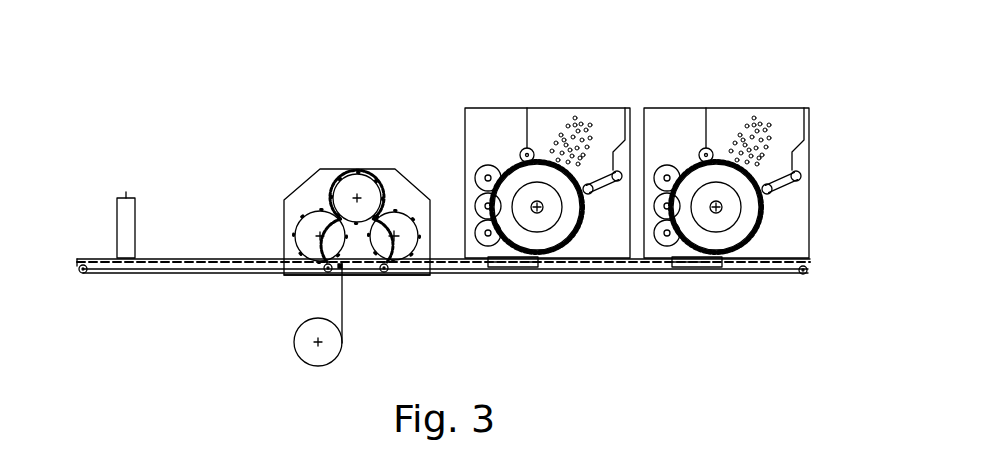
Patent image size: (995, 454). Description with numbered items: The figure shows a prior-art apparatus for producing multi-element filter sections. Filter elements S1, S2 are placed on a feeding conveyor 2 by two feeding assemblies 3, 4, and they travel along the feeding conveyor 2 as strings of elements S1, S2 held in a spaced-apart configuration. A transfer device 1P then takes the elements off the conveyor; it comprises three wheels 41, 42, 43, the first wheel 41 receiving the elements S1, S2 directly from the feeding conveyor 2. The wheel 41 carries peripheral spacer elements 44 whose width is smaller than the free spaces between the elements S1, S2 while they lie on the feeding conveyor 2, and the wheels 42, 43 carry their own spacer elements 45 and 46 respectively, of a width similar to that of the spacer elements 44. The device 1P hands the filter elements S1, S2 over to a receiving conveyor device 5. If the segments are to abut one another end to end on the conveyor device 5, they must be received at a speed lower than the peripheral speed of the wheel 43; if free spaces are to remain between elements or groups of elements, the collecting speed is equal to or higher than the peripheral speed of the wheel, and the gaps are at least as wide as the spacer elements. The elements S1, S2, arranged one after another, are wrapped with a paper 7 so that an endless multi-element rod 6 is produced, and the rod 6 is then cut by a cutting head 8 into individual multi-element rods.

The device for transferring the filter elements 1P is at (292, 136).
The feeding conveyor 2 is at (438, 270).
The feeding assembly 3 is at (553, 113).
The feeding assembly 4 is at (720, 113).
The receiving conveyor device 5 is at (280, 268).
The endless multi-element rod 6 is at (191, 264).
The paper 7 is at (342, 302).
The cutting head 8 is at (122, 200).
The wheel 41 is at (395, 233).
The wheel 42 is at (365, 187).
The wheel 43 is at (318, 235).
The peripheral spacer elements 44 is at (395, 230).
The spacer elements 45 is at (393, 208).
The spacer elements 46 is at (307, 216).
The filter element S1 is at (523, 263).
The filter element S2 is at (650, 265).